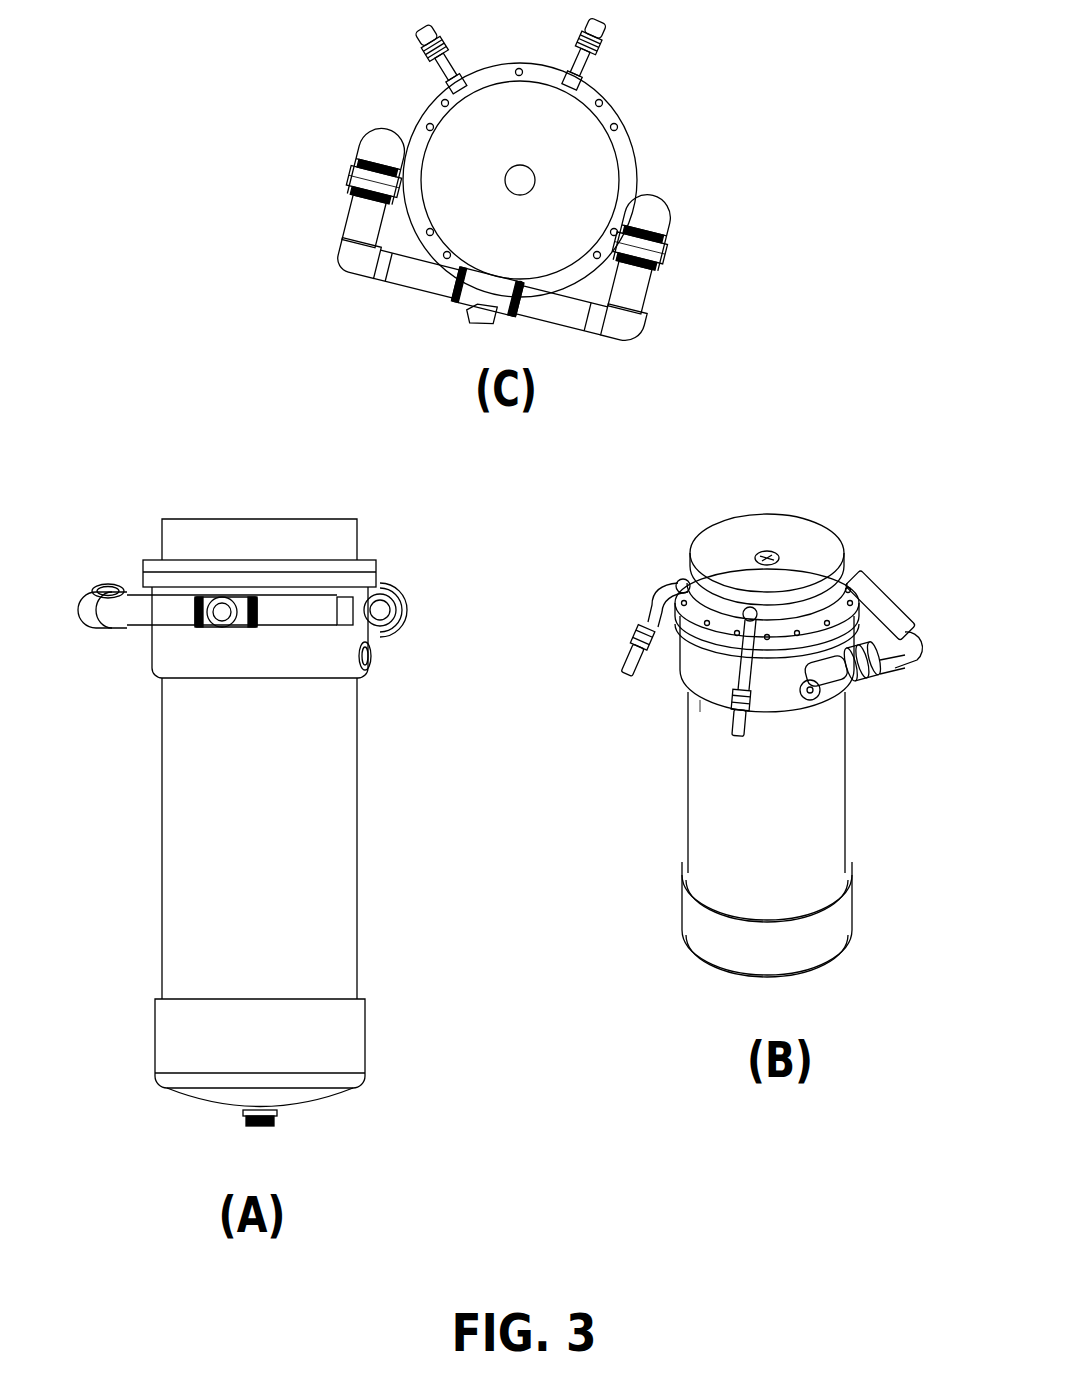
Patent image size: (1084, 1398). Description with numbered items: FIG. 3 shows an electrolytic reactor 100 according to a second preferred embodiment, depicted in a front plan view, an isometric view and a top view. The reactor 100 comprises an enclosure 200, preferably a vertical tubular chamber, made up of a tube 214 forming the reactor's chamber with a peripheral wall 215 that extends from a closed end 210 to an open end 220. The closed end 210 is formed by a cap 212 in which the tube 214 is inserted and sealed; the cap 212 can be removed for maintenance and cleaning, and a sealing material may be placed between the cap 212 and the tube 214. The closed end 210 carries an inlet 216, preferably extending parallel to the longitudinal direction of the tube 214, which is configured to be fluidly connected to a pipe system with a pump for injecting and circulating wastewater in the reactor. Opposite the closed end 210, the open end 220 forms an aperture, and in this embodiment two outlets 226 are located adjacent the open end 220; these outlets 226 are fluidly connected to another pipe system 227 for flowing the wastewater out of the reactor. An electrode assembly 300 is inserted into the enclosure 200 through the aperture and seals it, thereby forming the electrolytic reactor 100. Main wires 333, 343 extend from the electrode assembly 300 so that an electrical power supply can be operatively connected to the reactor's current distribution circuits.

The electrolytic reactor 100 is at (176, 476).
The enclosure 200 is at (385, 828).
The closed end 210 is at (665, 886).
The cap 212 is at (365, 1035).
The tube 214 is at (362, 930).
The peripheral wall 215 is at (803, 812).
The inlet 216 is at (279, 1132).
The open end 220 is at (380, 662).
The outlets 226 is at (395, 127).
The pipe system 227 is at (333, 250).
The electrode assembly 300 is at (662, 98).
The main wire 333 is at (618, 20).
The main wire 343 is at (737, 730).